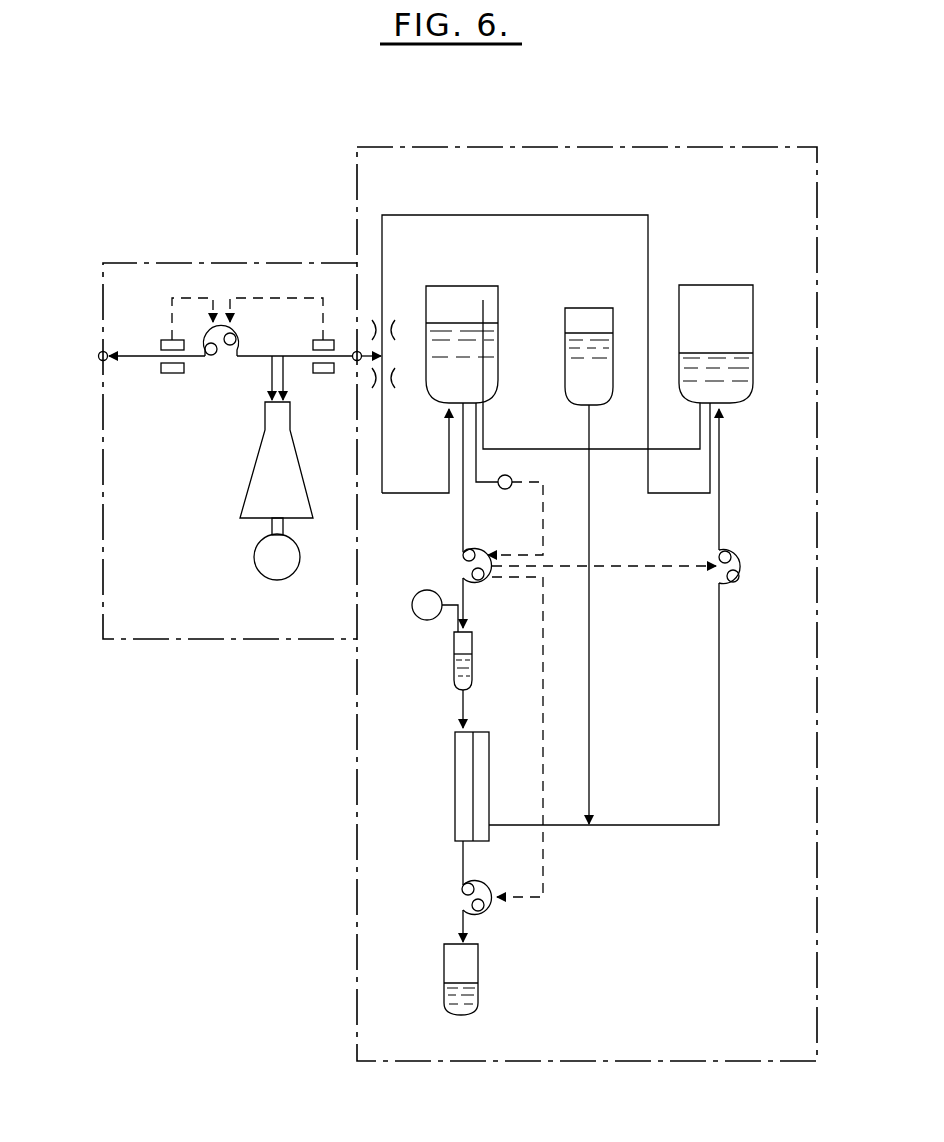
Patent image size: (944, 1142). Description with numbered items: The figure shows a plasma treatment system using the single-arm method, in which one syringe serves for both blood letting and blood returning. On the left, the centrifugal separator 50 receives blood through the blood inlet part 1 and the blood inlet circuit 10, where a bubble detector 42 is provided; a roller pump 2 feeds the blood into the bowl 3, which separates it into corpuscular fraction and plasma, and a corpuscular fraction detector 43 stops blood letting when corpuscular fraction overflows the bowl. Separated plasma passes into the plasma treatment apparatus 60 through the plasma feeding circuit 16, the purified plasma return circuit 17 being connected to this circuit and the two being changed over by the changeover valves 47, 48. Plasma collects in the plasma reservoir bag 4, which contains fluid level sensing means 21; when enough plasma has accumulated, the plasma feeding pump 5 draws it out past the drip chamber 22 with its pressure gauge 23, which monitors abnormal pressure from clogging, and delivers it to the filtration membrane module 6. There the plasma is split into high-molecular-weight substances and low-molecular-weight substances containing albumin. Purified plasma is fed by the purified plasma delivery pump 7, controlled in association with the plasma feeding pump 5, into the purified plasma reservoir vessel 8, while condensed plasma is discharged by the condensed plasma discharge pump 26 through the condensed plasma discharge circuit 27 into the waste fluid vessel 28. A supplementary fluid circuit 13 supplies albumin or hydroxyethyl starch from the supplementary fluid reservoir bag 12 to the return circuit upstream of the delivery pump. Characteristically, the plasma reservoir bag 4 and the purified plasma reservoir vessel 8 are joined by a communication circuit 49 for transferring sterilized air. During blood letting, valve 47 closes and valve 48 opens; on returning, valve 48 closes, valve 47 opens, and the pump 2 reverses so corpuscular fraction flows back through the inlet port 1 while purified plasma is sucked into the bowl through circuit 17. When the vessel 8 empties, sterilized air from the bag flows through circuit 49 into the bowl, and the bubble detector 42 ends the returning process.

The blood inlet part 1 is at (99, 360).
The roller pump 2 is at (222, 362).
The bowl 3 is at (248, 488).
The plasma reservoir bag 4 is at (490, 286).
The plasma feeding pump 5 is at (484, 549).
The filtration membrane module 6 is at (455, 787).
The purified plasma delivery pump 7 is at (742, 554).
The purified plasma reservoir vessel 8 is at (737, 285).
The blood inlet circuit 10 is at (140, 360).
The supplementary fluid reservoir bag 12 is at (594, 308).
The supplementary fluid circuit 13 is at (592, 703).
The plasma feeding circuit 16 is at (419, 494).
The purified plasma return circuit 17 is at (575, 215).
The fluid level sensing means 21 is at (504, 490).
The drip chamber 22 is at (474, 657).
The pressure gauge 23 is at (420, 620).
The condensed plasma discharge pump 26 is at (460, 900).
The condensed plasma discharge circuit 27 is at (460, 858).
The waste fluid vessel 28 is at (444, 972).
The bubble detector 42 is at (172, 375).
The corpuscular fraction detector 43 is at (324, 375).
The changeover valve 47 is at (393, 333).
The changeover valve 48 is at (393, 377).
The communication circuit 49 is at (627, 450).
The centrifugal separator 50 is at (227, 640).
The plasma treatment apparatus 60 is at (355, 868).